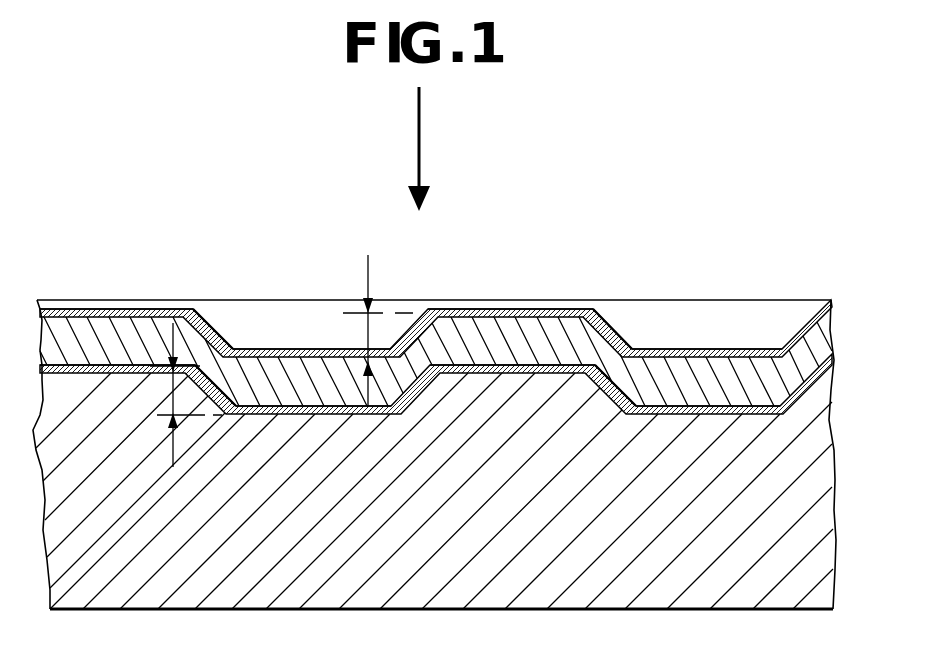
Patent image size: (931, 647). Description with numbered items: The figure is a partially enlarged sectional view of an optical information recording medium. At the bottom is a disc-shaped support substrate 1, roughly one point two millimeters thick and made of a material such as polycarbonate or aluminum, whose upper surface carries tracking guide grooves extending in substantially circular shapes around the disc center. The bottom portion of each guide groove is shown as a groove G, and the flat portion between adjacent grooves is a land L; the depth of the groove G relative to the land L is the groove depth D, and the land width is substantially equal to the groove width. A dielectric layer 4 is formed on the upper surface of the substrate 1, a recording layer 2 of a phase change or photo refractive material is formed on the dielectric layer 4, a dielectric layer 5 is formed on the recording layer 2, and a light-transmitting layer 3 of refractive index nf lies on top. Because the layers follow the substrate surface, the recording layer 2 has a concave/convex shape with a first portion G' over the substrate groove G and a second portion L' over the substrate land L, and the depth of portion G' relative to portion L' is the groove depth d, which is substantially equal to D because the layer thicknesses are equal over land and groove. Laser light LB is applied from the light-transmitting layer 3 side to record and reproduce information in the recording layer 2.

The support substrate 1 is at (815, 487).
The recording layer 2 is at (815, 348).
The light-transmitting layer 3 is at (788, 318).
The dielectric layer 4 is at (808, 390).
The dielectric layer 5 is at (767, 349).
The land L is at (317, 309).
The second portion corresponding to the land L' is at (316, 272).
The groove G is at (508, 356).
The first portion corresponding to the groove G' is at (502, 292).
The groove depth of the recording layer d is at (363, 338).
The groove depth of the substrate D is at (172, 396).
The laser light LB is at (419, 132).